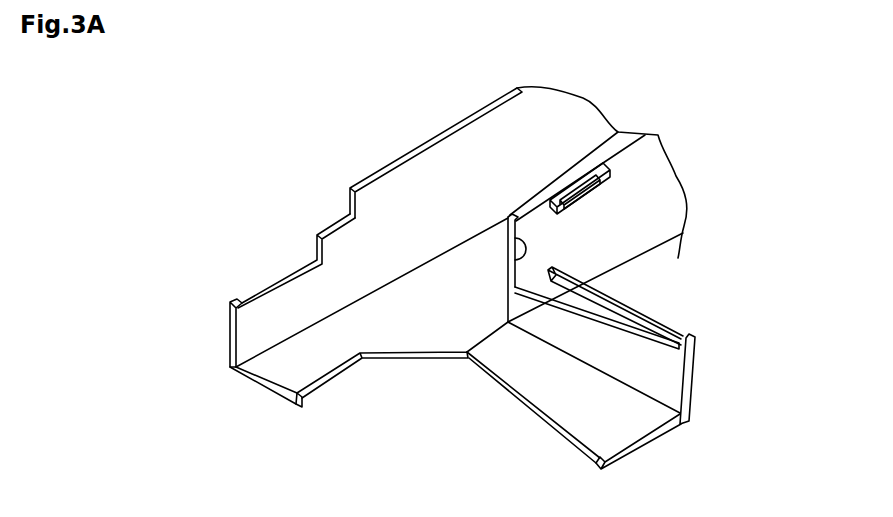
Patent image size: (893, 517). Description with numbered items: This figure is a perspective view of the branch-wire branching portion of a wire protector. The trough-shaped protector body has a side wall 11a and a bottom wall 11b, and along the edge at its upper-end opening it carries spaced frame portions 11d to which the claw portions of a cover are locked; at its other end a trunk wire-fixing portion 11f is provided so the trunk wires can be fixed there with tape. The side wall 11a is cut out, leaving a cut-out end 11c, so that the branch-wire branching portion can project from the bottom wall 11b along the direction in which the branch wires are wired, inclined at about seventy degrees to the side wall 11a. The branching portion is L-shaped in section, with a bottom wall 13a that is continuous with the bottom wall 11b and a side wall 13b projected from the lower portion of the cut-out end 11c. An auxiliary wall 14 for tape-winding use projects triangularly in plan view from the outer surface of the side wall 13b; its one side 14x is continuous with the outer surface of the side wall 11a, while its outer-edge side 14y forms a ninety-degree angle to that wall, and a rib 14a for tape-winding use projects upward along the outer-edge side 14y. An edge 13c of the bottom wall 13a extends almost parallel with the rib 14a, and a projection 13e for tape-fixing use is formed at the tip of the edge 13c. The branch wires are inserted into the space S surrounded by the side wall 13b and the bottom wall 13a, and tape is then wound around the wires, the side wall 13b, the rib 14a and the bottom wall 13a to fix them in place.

The side wall 11a is at (667, 224).
The bottom wall 11b is at (437, 280).
The cut-out end 11c is at (508, 217).
The frame portion 11d is at (600, 172).
The trunk wire-fixing portion 11f is at (253, 332).
The bottom wall 13a is at (547, 387).
The side wall 13b is at (692, 378).
The edge 13c is at (557, 432).
The projection for tape-fixing use 13e is at (597, 462).
The auxiliary wall for tape-winding use 14 is at (583, 287).
The rib for tape-winding use 14a is at (633, 313).
The one side of the auxiliary wall 14x is at (550, 281).
The outer-edge side of the auxiliary wall 14y is at (508, 322).
The space S is at (634, 413).